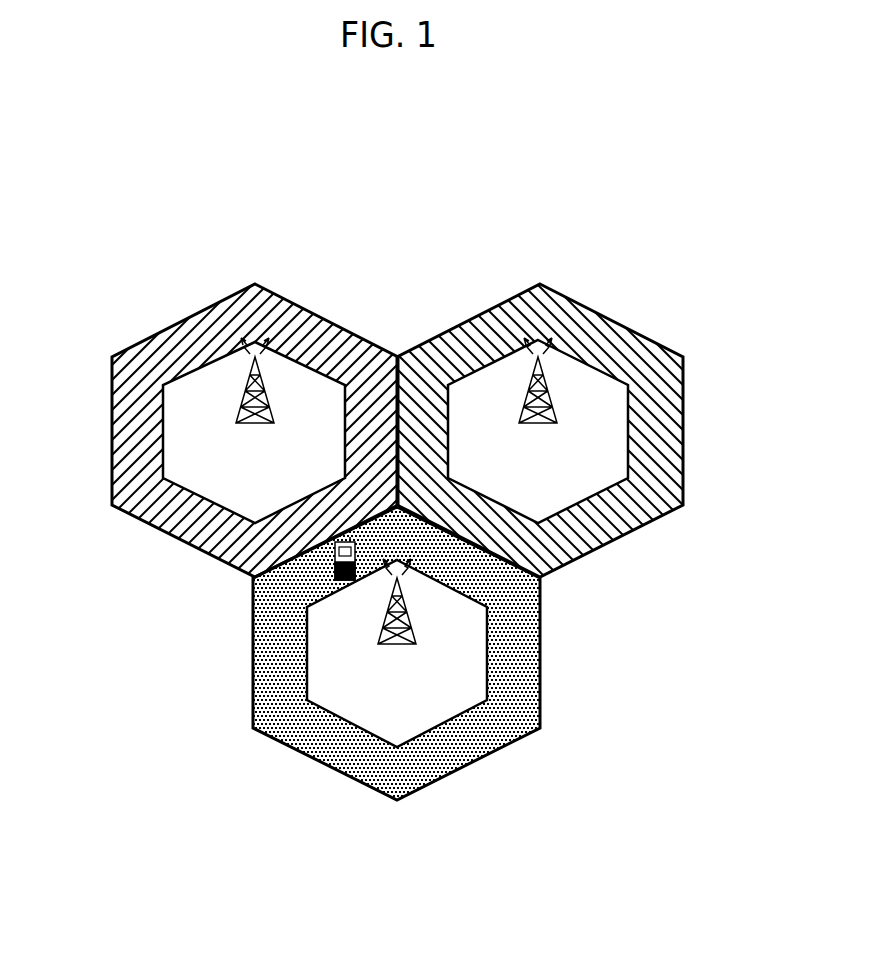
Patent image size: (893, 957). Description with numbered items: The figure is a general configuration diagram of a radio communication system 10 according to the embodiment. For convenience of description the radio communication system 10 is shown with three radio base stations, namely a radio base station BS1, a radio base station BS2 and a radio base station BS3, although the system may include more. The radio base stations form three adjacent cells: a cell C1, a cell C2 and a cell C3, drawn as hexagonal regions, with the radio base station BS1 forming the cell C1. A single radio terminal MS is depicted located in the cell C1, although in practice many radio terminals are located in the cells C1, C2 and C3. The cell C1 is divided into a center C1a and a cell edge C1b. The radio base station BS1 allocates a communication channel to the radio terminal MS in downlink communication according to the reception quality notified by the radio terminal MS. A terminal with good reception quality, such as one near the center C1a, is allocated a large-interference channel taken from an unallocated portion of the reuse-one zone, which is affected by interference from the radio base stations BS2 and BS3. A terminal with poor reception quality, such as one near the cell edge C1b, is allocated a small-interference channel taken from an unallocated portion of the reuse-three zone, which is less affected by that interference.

The radio communication system 10 is at (665, 205).
The radio base station BS1 is at (407, 618).
The radio base station BS2 is at (550, 393).
The radio base station BS3 is at (243, 399).
The cell C1 is at (457, 665).
The cell C2 is at (628, 540).
The cell C3 is at (165, 540).
The center of the cell C1a is at (458, 666).
The cell edge C1b is at (507, 715).
The radio terminal MS is at (337, 555).